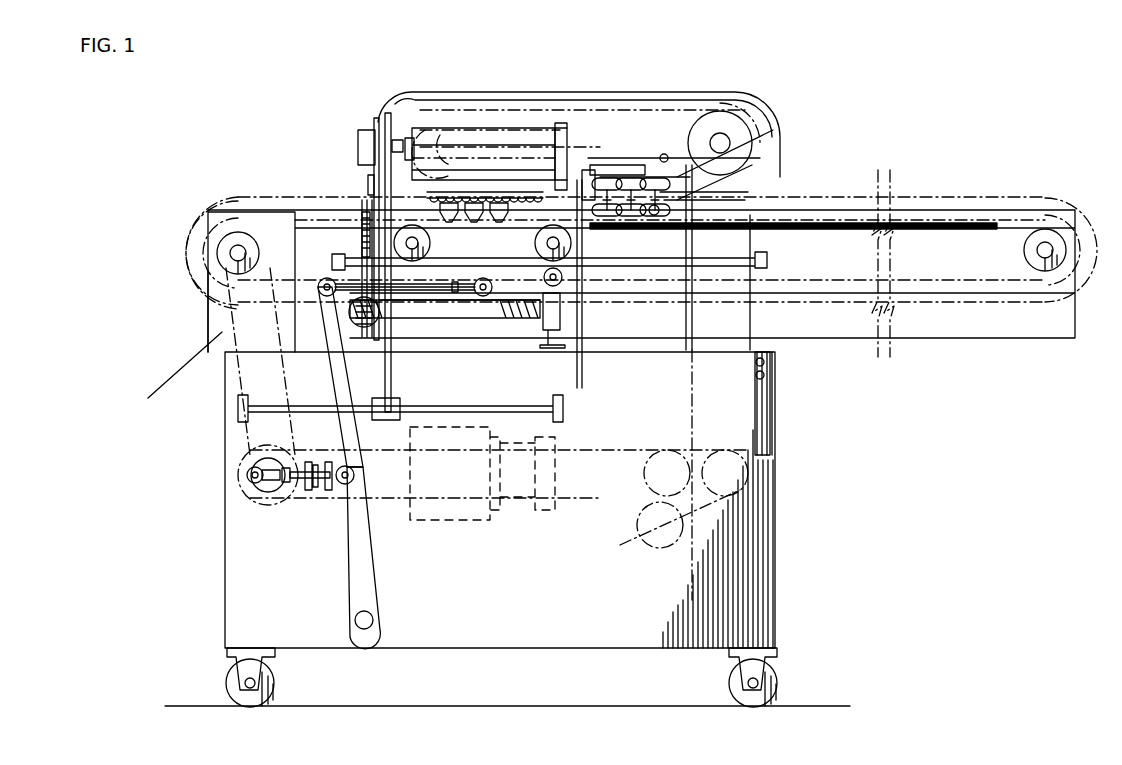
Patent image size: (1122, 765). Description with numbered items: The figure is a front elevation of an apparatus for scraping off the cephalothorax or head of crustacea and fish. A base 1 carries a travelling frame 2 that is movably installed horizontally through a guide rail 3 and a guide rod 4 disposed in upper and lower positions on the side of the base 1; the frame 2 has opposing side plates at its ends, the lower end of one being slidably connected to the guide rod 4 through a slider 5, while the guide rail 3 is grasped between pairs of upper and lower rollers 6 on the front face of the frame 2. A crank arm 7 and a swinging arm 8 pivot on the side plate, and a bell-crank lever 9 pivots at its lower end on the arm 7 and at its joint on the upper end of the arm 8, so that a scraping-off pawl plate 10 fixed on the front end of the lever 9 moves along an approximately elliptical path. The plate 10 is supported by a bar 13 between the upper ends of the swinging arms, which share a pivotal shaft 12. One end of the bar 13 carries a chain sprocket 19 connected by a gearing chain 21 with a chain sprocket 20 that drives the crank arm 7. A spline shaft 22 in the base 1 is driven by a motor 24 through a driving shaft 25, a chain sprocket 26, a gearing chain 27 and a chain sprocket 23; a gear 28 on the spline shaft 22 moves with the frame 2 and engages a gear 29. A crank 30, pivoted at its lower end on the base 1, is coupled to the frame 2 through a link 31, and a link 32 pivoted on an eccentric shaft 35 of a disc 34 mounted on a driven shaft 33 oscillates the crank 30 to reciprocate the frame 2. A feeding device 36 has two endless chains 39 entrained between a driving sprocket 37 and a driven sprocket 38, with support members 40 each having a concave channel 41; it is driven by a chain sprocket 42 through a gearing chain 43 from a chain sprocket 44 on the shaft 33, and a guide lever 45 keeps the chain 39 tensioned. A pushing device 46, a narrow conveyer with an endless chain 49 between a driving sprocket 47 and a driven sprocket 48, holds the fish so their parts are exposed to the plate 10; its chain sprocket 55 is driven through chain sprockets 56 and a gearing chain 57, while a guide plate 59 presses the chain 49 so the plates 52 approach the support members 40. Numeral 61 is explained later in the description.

The base 1 is at (778, 525).
The travelling frame 2 is at (490, 295).
The guide rail 3 is at (730, 262).
The guide rod 4 is at (524, 406).
The slider 5 is at (392, 420).
The roller 6 is at (572, 243).
The crank arm 7 is at (388, 113).
The swinging arm 8 is at (399, 140).
The bell-crank lever 9 is at (412, 148).
The scraping-off pawl plate 10 is at (510, 160).
The pivotal shaft 12 is at (480, 192).
The bar 13 is at (535, 150).
The chain sprocket 19 is at (364, 215).
The chain sprocket 20 is at (360, 135).
The gearing chain 21 is at (370, 182).
The spline shaft 22 is at (470, 320).
The chain sprocket 23 is at (313, 272).
The motor 24 is at (482, 522).
The driving shaft 25 is at (330, 492).
The chain sprocket 26 is at (308, 492).
The gearing chain 27 is at (320, 405).
The gear 28 is at (364, 328).
The gear 29 is at (362, 240).
The crank 30 is at (368, 550).
The link 31 is at (445, 270).
The link 32 is at (275, 490).
The driven shaft 33 is at (265, 485).
The disc 34 is at (262, 461).
The eccentric shaft 35 is at (250, 477).
The feeding device 36 is at (914, 188).
The driving sprocket 37 is at (262, 232).
The driven sprocket 38 is at (1044, 230).
The endless chain 39 is at (700, 212).
The support member 40 is at (666, 200).
The concave channel 41 is at (662, 192).
The chain sprocket 42 is at (212, 245).
The gearing chain 43 is at (208, 312).
The chain sprocket 44 is at (262, 448).
The guide lever 45 is at (879, 252).
The pushing device 46 is at (664, 102).
The driving sprocket 47 is at (730, 140).
The driven sprocket 48 is at (435, 150).
The endless chain 49 is at (680, 172).
The plate 52 is at (632, 178).
The chain sprocket 55 is at (745, 125).
The chain sprocket 56 is at (645, 533).
The gearing chain 57 is at (590, 500).
The guide plate 59 is at (602, 162).
The support 61 is at (210, 346).